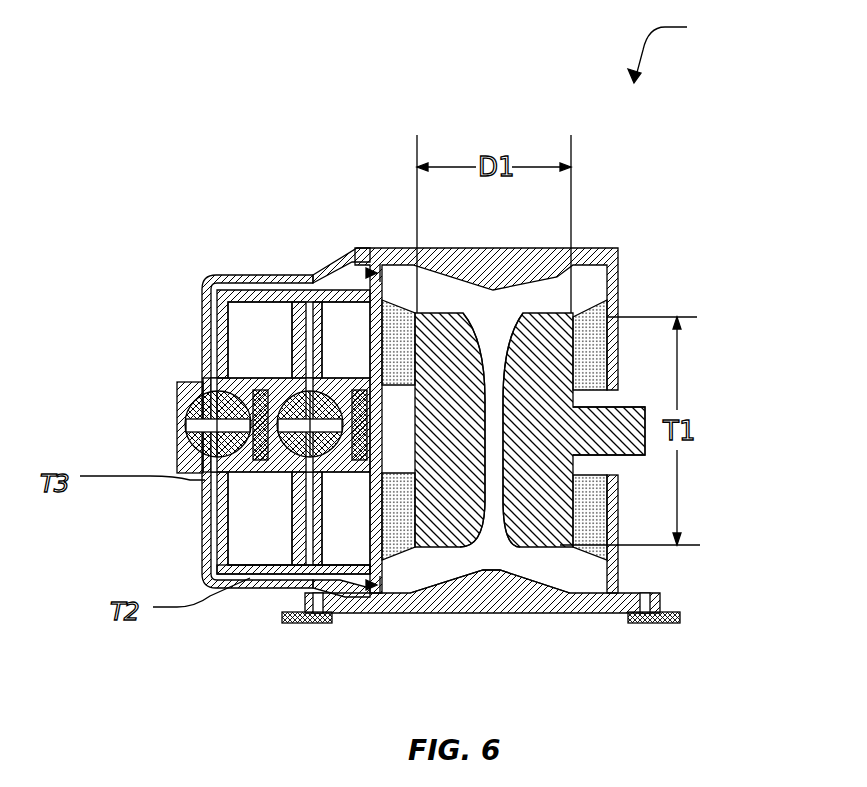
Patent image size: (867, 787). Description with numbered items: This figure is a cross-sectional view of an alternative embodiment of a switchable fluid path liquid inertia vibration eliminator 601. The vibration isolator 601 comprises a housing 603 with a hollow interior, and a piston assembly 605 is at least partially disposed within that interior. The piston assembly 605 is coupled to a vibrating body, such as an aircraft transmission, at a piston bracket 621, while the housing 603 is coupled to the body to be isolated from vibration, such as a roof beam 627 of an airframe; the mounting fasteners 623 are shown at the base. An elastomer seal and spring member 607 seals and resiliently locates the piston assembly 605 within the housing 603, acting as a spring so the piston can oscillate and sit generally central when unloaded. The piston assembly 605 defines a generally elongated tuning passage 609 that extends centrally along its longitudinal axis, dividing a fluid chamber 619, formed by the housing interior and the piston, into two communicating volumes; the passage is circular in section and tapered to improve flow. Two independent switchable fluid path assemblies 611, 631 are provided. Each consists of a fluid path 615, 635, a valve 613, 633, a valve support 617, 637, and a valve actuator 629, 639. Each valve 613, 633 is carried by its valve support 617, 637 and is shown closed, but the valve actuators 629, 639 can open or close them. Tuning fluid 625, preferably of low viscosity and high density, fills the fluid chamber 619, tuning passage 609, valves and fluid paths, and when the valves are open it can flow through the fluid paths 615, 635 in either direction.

The switchable fluid path liquid inertia vibration eliminator 601 is at (683, 52).
The housing 603 is at (405, 305).
The piston assembly 605 is at (510, 560).
The elastomer seal and spring member 607 is at (397, 300).
The tuning passage 609 is at (485, 358).
The switchable fluid path assembly 611 is at (337, 292).
The valve 613 is at (300, 503).
The fluid path 615 is at (345, 352).
The valve support 617 is at (300, 378).
The fluid chamber 619 is at (595, 248).
The piston bracket 621 is at (630, 407).
The fastener 623 is at (295, 600).
The tuning fluid 625 is at (486, 575).
The roof beam 627 is at (290, 624).
The valve actuator 629 is at (228, 558).
The switchable fluid path assembly 631 is at (245, 308).
The valve 633 is at (185, 432).
The fluid path 635 is at (292, 330).
The valve support 637 is at (182, 382).
The valve actuator 639 is at (216, 486).